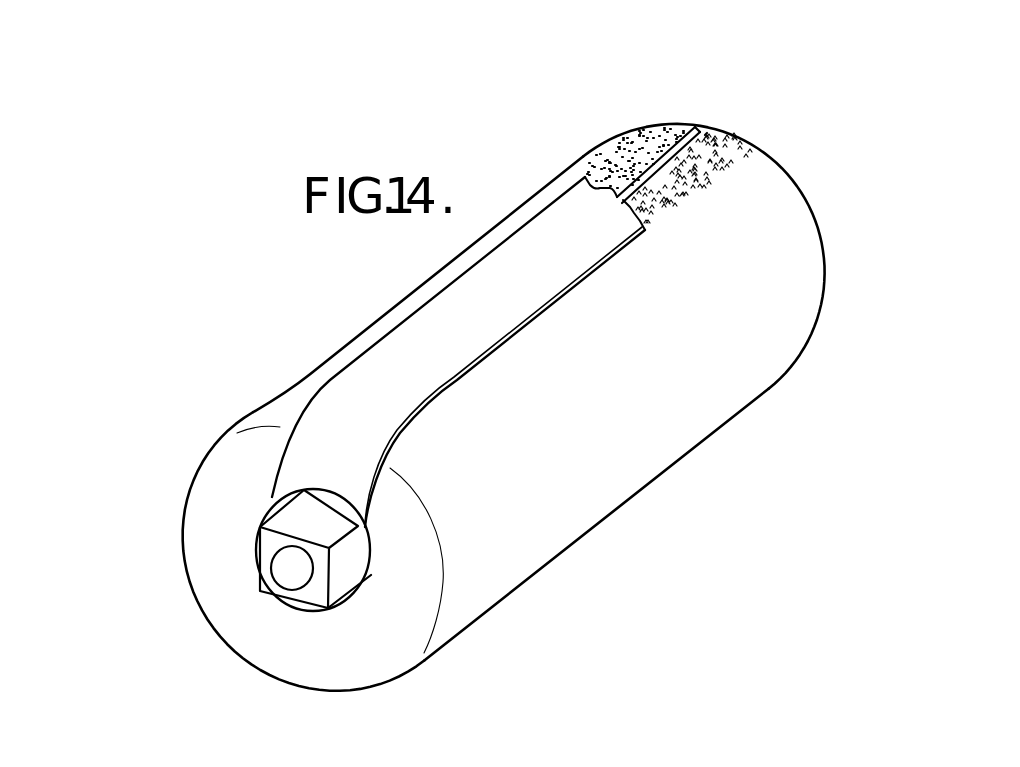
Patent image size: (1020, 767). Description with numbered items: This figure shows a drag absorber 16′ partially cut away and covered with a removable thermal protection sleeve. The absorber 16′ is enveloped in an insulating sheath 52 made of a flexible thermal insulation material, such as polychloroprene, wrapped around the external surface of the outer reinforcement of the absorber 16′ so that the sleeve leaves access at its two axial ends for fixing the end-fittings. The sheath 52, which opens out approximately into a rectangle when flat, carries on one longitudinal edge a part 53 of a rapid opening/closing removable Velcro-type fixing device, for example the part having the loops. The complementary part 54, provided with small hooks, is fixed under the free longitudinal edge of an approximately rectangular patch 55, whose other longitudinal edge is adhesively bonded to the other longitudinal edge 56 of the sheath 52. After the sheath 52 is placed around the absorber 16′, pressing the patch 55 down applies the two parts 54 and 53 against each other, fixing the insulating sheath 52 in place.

The insulating sheath 52 is at (527, 552).
The part of rapid opening/closing removable fixing device 53 is at (737, 143).
The complementary part of fixing device 54 is at (445, 373).
The patch 55 is at (365, 367).
The other longitudinal edge of the sheath 56 is at (653, 140).
The absorber 16′ is at (252, 559).